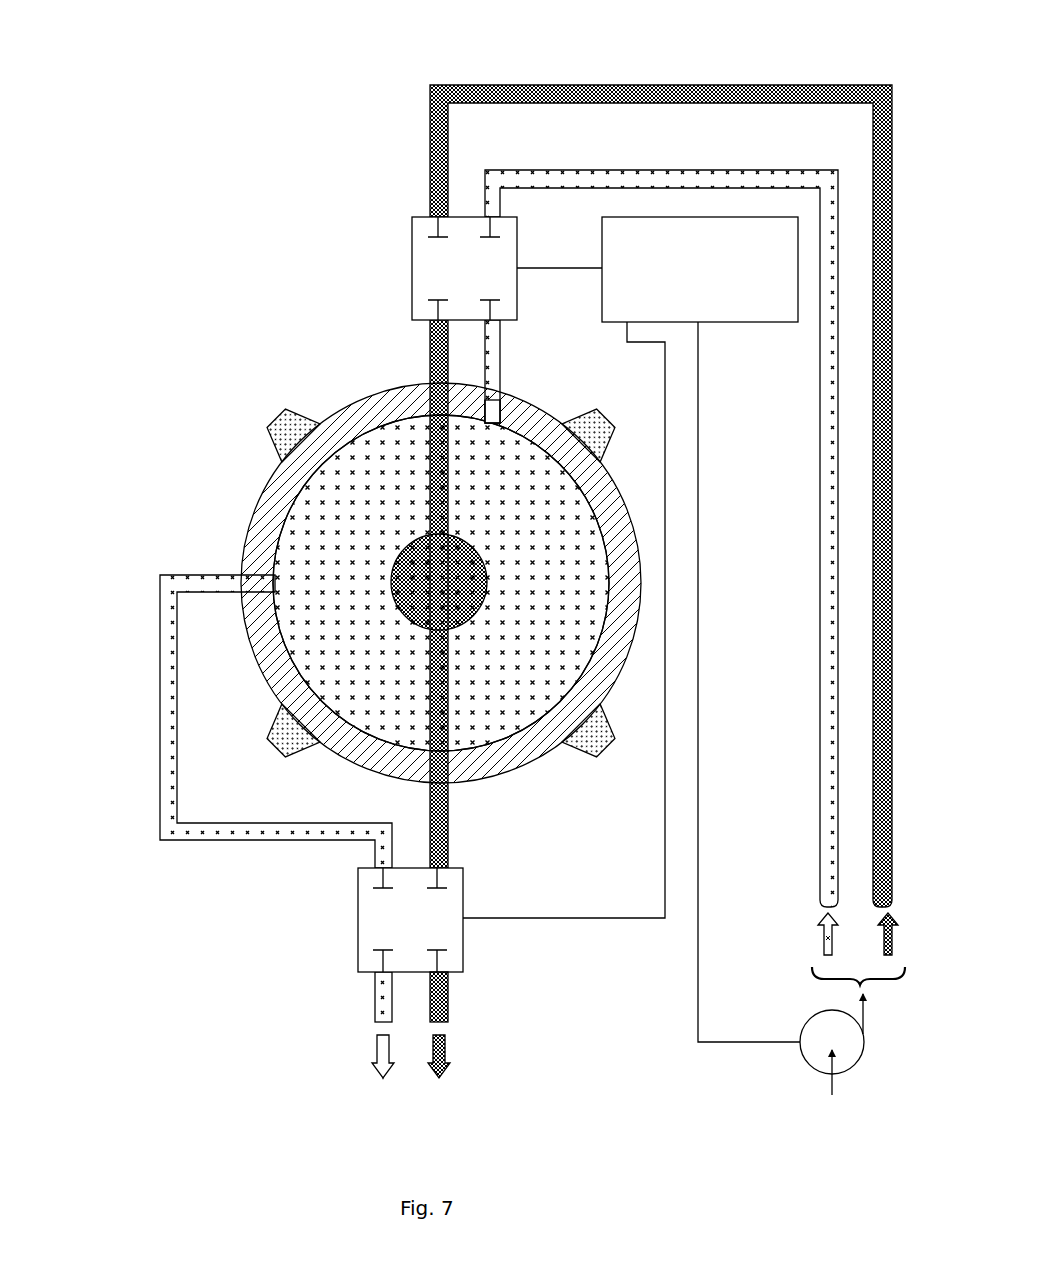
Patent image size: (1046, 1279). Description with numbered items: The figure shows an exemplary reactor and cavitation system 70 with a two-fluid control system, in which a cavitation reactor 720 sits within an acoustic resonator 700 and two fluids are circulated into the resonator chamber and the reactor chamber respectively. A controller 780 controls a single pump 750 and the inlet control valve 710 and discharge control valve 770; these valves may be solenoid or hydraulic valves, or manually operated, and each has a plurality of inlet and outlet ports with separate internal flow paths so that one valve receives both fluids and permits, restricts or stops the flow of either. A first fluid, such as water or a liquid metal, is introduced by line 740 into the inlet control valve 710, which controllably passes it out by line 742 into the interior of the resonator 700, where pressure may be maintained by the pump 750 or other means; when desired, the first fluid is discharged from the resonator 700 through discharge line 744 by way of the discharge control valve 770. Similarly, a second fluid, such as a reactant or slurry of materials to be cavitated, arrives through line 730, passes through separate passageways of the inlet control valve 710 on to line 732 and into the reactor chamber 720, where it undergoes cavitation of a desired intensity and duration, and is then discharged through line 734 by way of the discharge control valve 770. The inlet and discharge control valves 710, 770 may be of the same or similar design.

The fluid processing system 70 is at (210, 108).
The acoustic resonator 700 is at (262, 477).
The inlet control valve 710 is at (412, 238).
The cavitation reactor 720 is at (387, 582).
The line 730 is at (603, 85).
The line 732 is at (430, 335).
The line 734 is at (448, 853).
The line 740 is at (667, 172).
The line 742 is at (485, 375).
The discharge line 744 is at (160, 750).
The pump 750 is at (822, 1073).
The discharge control valve 770 is at (358, 932).
The controller 780 is at (631, 629).